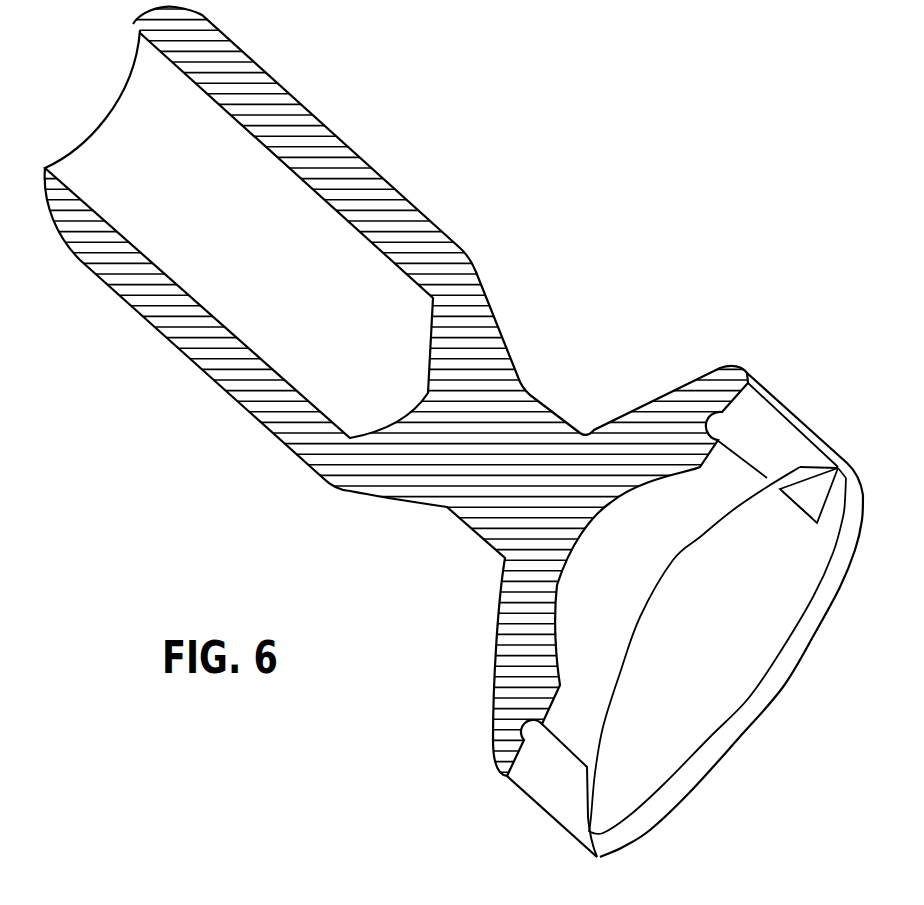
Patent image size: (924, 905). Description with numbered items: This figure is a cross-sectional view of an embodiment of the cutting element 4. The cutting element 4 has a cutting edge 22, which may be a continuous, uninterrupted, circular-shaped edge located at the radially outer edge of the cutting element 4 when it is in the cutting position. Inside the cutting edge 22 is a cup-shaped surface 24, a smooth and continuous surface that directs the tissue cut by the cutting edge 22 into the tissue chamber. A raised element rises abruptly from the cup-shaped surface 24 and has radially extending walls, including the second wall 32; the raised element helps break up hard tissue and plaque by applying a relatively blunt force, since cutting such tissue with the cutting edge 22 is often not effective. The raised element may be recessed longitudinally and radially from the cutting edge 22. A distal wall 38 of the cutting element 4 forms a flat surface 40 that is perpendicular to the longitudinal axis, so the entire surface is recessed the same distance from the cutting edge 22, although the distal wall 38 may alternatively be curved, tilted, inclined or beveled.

The cutting element 4 is at (652, 226).
The cutting edge 22 is at (812, 637).
The cup-shaped surface 24 is at (733, 660).
The second wall 32 is at (800, 493).
The distal wall 38 is at (838, 488).
The flat surface 40 is at (823, 512).